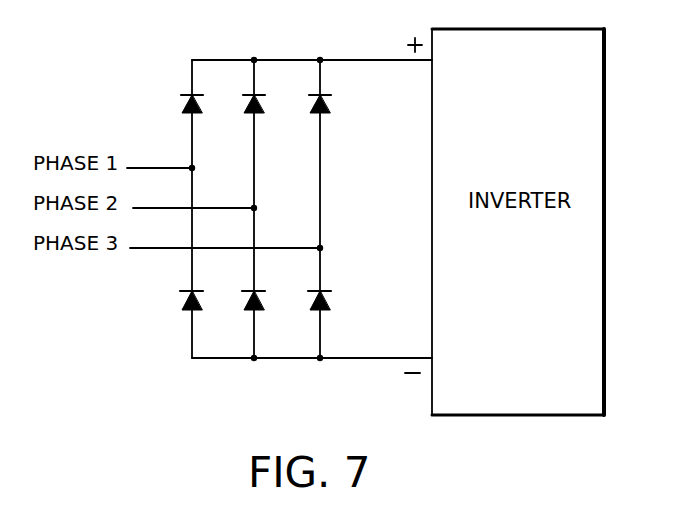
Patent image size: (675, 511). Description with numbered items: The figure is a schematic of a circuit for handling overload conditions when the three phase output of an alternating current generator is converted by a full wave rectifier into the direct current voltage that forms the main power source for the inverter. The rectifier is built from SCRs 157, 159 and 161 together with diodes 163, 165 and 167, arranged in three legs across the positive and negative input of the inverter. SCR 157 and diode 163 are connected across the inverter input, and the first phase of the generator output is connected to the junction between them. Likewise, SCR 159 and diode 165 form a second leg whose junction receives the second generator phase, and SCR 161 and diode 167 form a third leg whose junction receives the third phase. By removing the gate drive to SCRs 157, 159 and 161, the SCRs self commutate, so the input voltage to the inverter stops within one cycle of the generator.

The SCR 157 is at (168, 305).
The SCR 159 is at (267, 307).
The SCR 161 is at (330, 303).
The diode 163 is at (185, 101).
The diode 165 is at (266, 103).
The diode 167 is at (335, 107).